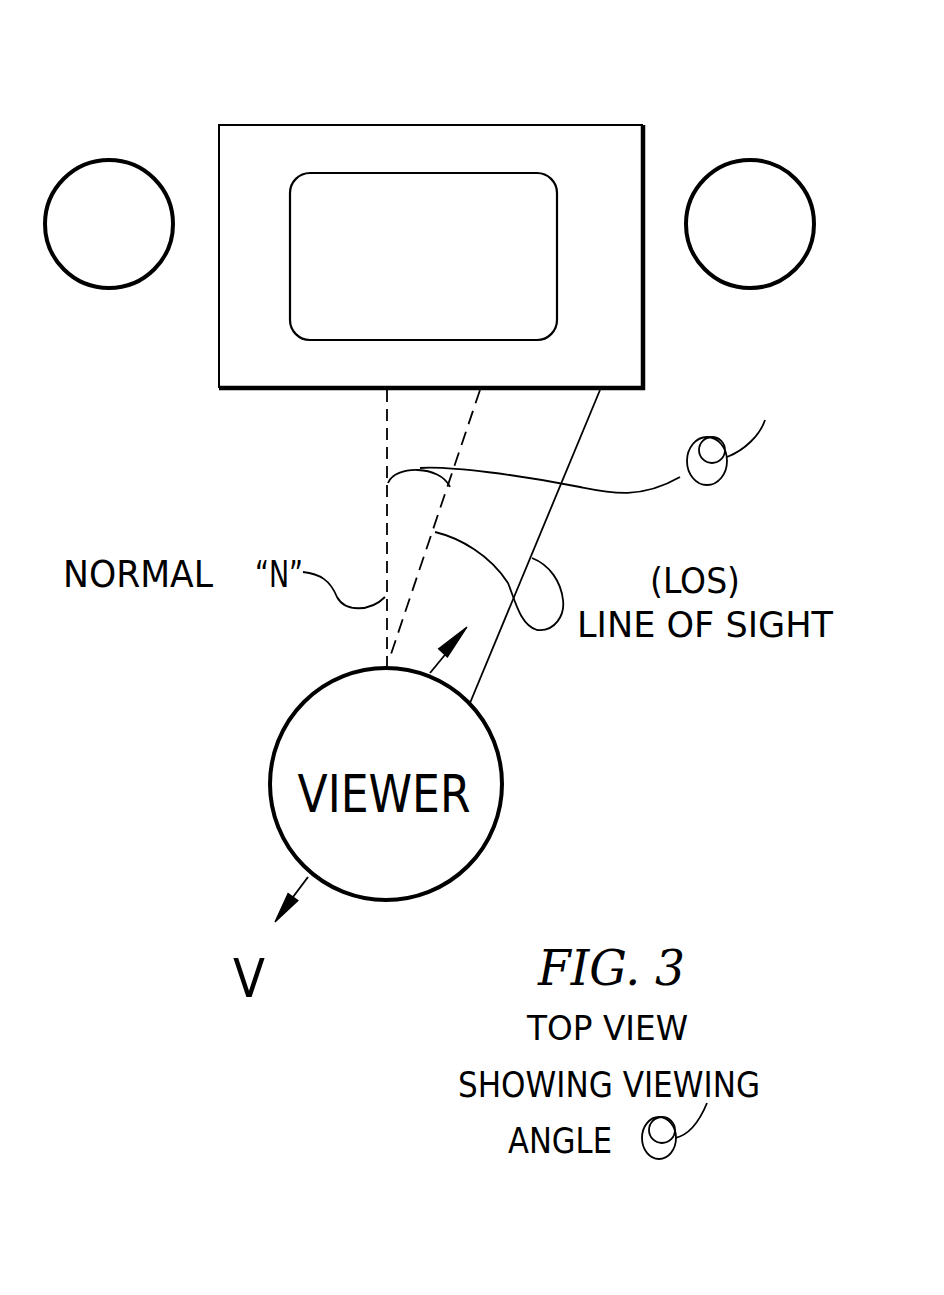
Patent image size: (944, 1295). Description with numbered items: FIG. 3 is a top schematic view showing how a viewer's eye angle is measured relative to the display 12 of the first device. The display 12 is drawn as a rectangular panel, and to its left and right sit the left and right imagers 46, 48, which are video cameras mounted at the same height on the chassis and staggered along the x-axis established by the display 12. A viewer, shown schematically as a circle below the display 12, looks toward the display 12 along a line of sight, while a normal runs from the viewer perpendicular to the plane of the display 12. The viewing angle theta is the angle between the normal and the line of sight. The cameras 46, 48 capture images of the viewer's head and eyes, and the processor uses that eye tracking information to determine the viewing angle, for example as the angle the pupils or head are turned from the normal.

The display 12 is at (512, 137).
The left imager 46 is at (118, 178).
The right imager 48 is at (758, 183).